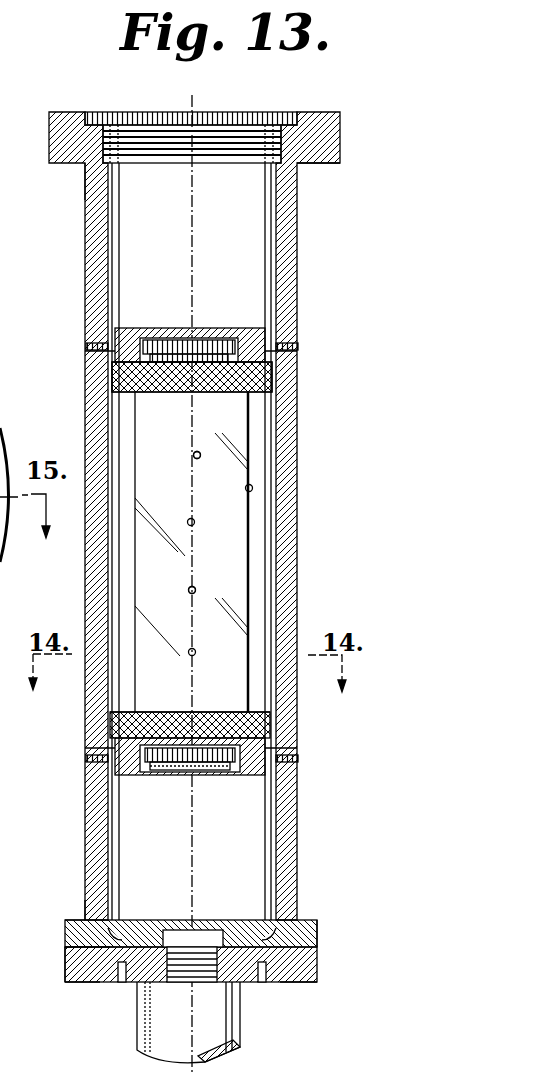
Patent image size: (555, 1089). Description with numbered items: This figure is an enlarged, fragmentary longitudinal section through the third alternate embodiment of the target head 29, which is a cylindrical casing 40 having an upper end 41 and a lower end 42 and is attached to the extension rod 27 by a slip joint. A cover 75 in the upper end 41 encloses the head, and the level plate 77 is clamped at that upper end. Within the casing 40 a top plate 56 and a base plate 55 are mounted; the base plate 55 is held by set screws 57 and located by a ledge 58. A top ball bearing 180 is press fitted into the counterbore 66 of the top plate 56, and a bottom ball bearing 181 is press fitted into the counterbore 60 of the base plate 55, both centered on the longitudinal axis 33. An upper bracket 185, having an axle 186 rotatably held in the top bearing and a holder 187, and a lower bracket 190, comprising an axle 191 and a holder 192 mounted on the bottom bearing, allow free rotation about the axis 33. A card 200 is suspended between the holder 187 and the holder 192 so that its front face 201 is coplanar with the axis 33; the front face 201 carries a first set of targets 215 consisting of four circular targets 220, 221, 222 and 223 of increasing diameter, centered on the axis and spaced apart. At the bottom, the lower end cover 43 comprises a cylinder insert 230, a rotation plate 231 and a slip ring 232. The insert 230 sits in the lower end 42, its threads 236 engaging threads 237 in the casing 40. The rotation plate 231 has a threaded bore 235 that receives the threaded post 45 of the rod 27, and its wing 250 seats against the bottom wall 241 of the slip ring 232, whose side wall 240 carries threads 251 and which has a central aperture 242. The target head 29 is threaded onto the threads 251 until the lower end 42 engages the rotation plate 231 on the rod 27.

The rod 27 is at (240, 1046).
The target head 29 is at (297, 304).
The longitudinal axis 33 is at (192, 106).
The cylindrical casing 40 is at (85, 233).
The upper end 41 is at (85, 183).
The lower end 42 is at (300, 933).
The lower end cover 43 is at (72, 978).
The threaded post 45 is at (180, 984).
The base plate 55 is at (112, 749).
The top plate 56 is at (115, 350).
The set screws 57 is at (292, 763).
The ledge 58 is at (88, 763).
The counterbore 60 is at (158, 776).
The counterbore 66 is at (150, 340).
The cover 75 is at (163, 116).
The plate 77 is at (320, 166).
The top ball bearing 180 is at (210, 341).
The bottom ball bearing 181 is at (258, 776).
The upper bracket 185 is at (272, 380).
The axle 186 is at (143, 382).
The holder 187 is at (112, 380).
The lower bracket 190 is at (212, 712).
The axle 191 is at (146, 712).
The holder 192 is at (270, 724).
The card 200 is at (245, 488).
The front face 201 is at (240, 544).
The first set of targets 215 is at (194, 458).
The circular target 220 is at (195, 650).
The circular target 221 is at (195, 589).
The circular target 222 is at (194, 522).
The circular target 223 is at (200, 452).
The cylinder insert 230 is at (210, 925).
The rotation plate 231 is at (300, 958).
The slip ring 232 is at (298, 981).
The threaded bore 235 is at (186, 946).
The threads 236 is at (116, 926).
The threads 237 is at (88, 916).
The side wall 240 is at (75, 928).
The bottom wall 241 is at (82, 941).
The central aperture 242 is at (128, 984).
The wing 250 is at (75, 966).
The threads 251 is at (290, 922).